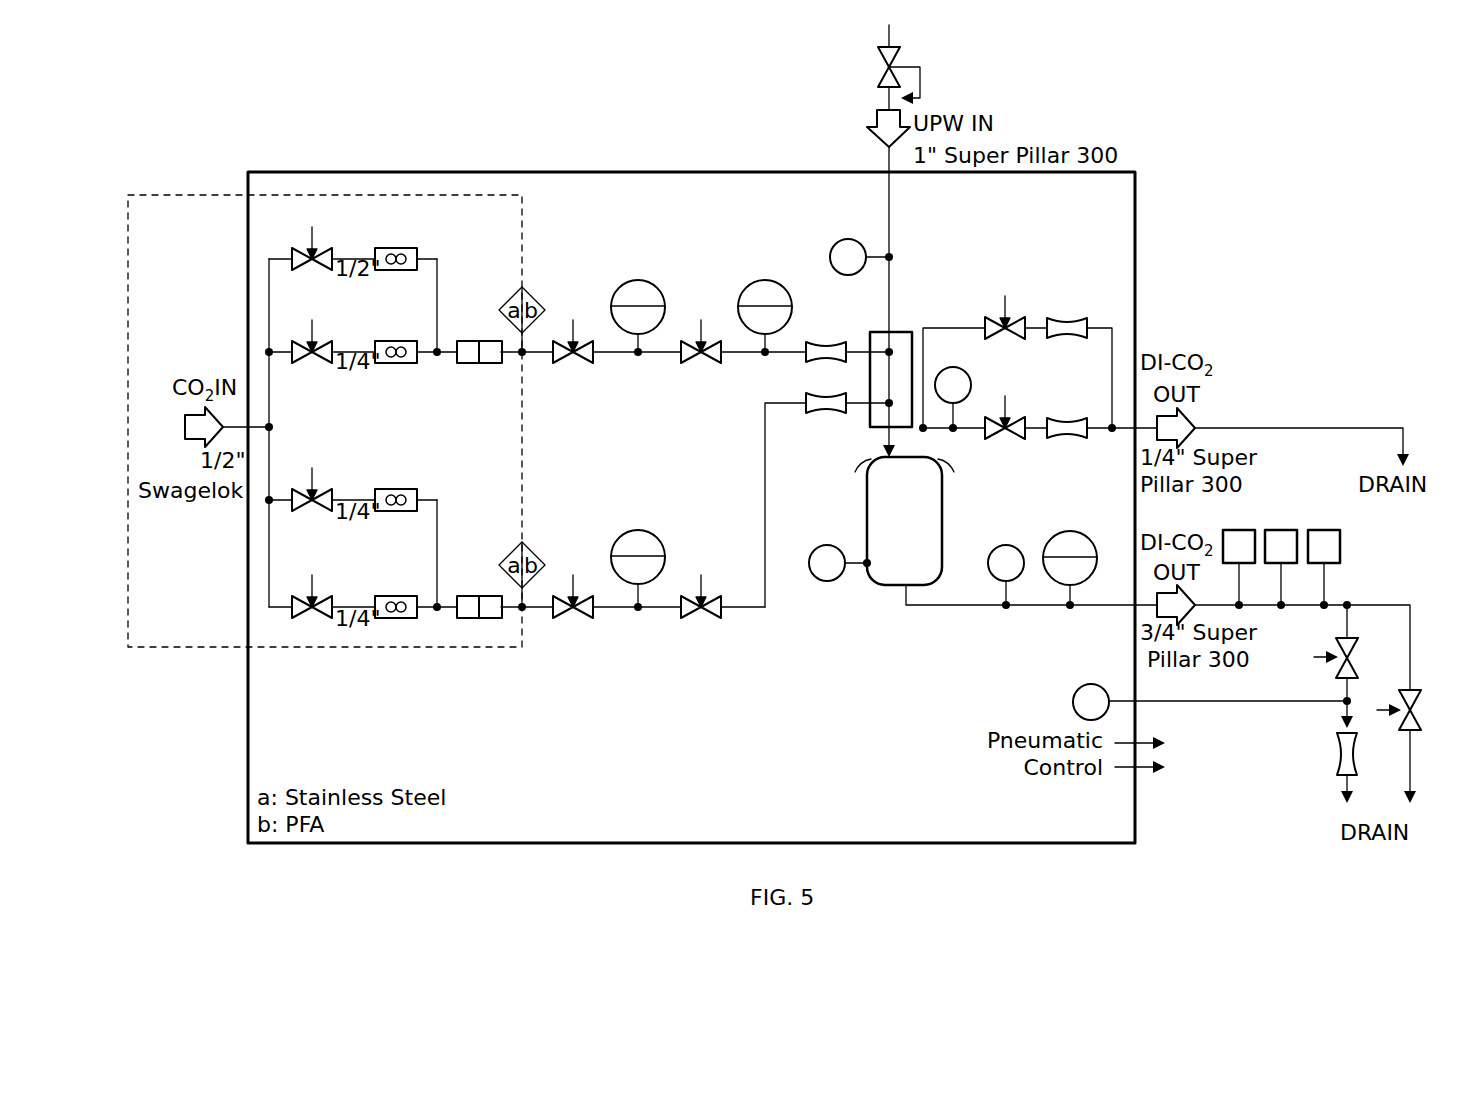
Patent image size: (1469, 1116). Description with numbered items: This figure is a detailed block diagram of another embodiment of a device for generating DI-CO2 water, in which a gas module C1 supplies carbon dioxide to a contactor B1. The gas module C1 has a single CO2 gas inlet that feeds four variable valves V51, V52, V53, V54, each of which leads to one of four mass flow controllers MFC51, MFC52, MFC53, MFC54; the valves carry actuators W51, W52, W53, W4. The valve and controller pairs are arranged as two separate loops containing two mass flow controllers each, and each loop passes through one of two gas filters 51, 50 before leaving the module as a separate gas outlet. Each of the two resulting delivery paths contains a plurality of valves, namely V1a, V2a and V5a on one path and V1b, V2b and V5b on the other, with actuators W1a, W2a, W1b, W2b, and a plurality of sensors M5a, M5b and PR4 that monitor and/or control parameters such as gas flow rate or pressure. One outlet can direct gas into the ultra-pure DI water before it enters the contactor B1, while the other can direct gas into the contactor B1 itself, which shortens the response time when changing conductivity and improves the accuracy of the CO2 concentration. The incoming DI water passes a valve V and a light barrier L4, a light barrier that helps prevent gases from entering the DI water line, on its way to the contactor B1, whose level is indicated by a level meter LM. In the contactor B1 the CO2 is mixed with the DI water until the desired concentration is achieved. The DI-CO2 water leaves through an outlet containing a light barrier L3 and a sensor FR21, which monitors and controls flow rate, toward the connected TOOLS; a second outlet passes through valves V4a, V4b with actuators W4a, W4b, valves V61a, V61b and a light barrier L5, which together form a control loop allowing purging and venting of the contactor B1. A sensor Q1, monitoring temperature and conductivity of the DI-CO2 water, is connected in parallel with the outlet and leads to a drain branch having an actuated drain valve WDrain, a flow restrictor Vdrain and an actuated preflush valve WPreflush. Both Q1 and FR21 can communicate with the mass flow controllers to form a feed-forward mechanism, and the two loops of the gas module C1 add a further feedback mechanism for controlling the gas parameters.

The gas module C1 is at (325, 421).
The variable valve V51 is at (313, 271).
The variable valve V52 is at (313, 364).
The variable valve V53 is at (309, 513).
The variable valve V54 is at (309, 620).
The pneumatic actuator W51 is at (314, 231).
The pneumatic actuator W52 is at (314, 324).
The pneumatic actuator W53 is at (309, 472).
The pneumatic actuator W4 is at (308, 579).
The mass flow controller MFC51 is at (392, 247).
The mass flow controller MFC52 is at (392, 340).
The mass flow controller MFC53 is at (392, 489).
The mass flow controller MFC54 is at (389, 596).
The gas filter 51 is at (470, 364).
The gas filter 50 is at (470, 619).
The valve V1a is at (577, 364).
The valve V1b is at (577, 619).
The pneumatic actuator W1a is at (579, 323).
The pneumatic actuator W1b is at (581, 578).
The valve V2a is at (704, 364).
The valve V2b is at (704, 619).
The pneumatic actuator W2a is at (708, 323).
The pneumatic actuator W2b is at (709, 578).
The sensor M5a is at (638, 316).
The sensor M5b is at (638, 568).
The sensor PR4 is at (765, 316).
The valve V5a is at (827, 364).
The valve V5b is at (827, 415).
The UPW inlet valve with bypass V is at (890, 75).
The light barrier L4 is at (861, 257).
The light barrier L5 is at (953, 397).
The valve V4a is at (1007, 341).
The valve V4b is at (1007, 441).
The pneumatic actuator W4a is at (1008, 301).
The pneumatic actuator W4b is at (1009, 400).
The valve V61a is at (1071, 341).
The valve V61b is at (1071, 441).
The contactor B1 is at (904, 521).
The level meter LM is at (840, 563).
The light barrier L3 is at (1006, 575).
The sensor FR21 is at (1070, 568).
The process tools supplied by DI-CO2 TOOLS is at (1281, 554).
The drain valve with actuator W-Drain WDrain is at (1318, 658).
The drain flow restrictor V Vdrain is at (1354, 754).
The preflush valve with actuator W-Preflush WPreflush is at (1417, 693).
The sensor Q1 is at (1210, 702).